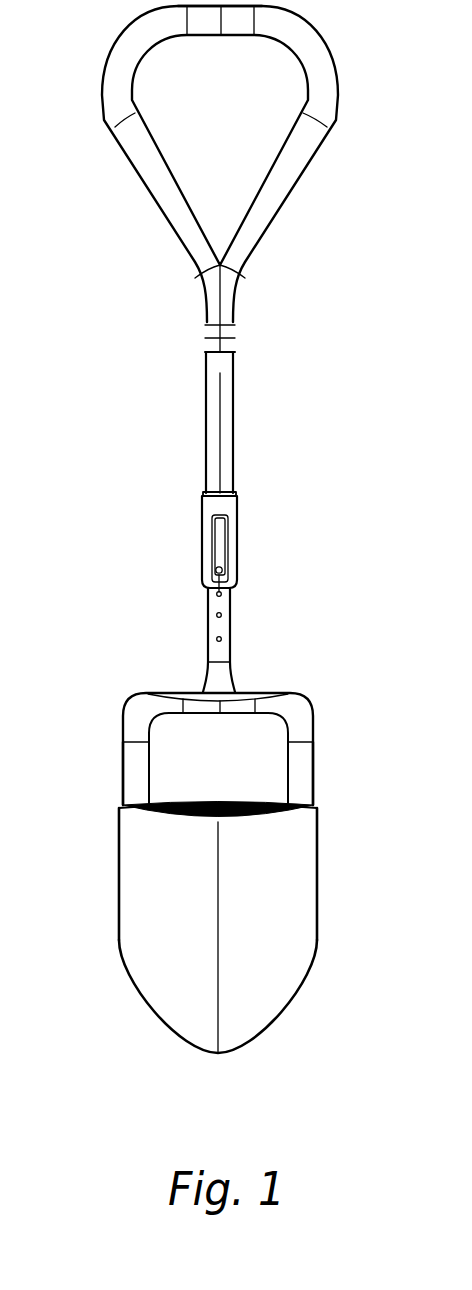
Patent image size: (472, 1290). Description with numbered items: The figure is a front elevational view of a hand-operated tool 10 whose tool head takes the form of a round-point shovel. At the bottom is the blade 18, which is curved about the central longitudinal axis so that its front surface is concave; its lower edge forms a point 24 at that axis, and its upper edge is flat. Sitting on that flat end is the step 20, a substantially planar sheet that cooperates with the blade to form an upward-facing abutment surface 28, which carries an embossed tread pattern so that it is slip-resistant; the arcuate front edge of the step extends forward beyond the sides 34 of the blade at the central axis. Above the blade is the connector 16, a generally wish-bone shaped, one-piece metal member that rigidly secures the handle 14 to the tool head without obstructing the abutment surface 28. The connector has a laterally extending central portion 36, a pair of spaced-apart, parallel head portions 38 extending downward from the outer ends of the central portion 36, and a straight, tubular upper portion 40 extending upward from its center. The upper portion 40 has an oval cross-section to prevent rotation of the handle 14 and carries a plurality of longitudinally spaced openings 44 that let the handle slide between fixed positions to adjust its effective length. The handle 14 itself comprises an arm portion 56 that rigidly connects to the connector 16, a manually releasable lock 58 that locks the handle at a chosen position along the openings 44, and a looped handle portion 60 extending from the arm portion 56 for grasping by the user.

The hand-operated tool 10 is at (342, 369).
The handle 14 is at (203, 398).
The connector 16 is at (322, 746).
The blade 18 is at (300, 997).
The step 20 is at (184, 797).
The point 24 is at (217, 1055).
The abutment surface 28 is at (276, 797).
The sides of the blade 34 is at (118, 912).
The central portion 36 is at (272, 690).
The head portions 38 is at (122, 775).
The upper portion 40 is at (232, 652).
The openings 44 is at (223, 614).
The arm portion 56 is at (236, 400).
The manually releasable lock 58 is at (237, 538).
The handle portion 60 is at (304, 176).